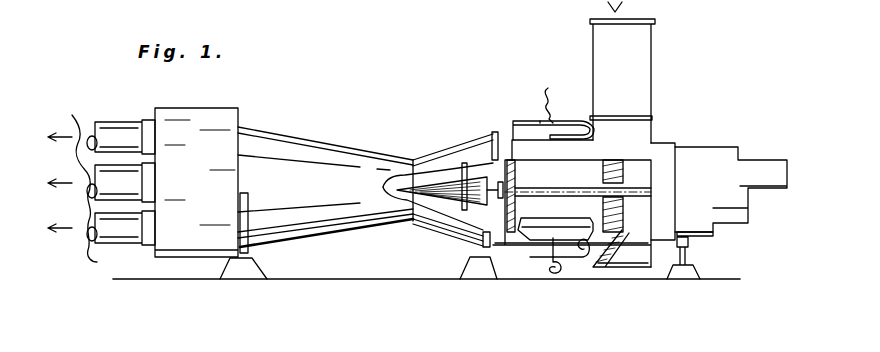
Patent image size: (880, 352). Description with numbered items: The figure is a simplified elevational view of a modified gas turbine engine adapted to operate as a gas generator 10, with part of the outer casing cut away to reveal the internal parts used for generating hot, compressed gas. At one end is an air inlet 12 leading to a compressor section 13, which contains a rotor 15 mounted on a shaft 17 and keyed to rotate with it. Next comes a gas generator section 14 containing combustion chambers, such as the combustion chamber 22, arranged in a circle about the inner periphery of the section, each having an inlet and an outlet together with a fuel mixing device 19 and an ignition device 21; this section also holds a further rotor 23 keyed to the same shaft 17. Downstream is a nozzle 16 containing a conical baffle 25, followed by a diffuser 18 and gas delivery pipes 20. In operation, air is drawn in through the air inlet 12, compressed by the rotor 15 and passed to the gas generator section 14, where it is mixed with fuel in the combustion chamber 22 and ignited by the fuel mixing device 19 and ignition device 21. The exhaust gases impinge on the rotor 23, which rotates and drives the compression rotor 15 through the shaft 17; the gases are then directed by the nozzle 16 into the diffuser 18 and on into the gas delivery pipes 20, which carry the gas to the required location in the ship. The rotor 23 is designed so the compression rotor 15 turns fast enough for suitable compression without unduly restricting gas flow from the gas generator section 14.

The gas generator 10 is at (380, 130).
The air inlet 12 is at (640, 52).
The compressor section 13 is at (640, 133).
The gas generator section 14 is at (508, 140).
The rotor 15 is at (637, 265).
The nozzle 16 is at (440, 160).
The shaft 17 is at (528, 160).
The diffuser 18 is at (302, 149).
The fuel mixing device 19 is at (553, 121).
The gas delivery pipes 20 is at (107, 128).
The ignition device 21 is at (541, 122).
The combustion chamber 22 is at (560, 226).
The rotor 23 is at (510, 230).
The conical baffle 25 is at (443, 194).